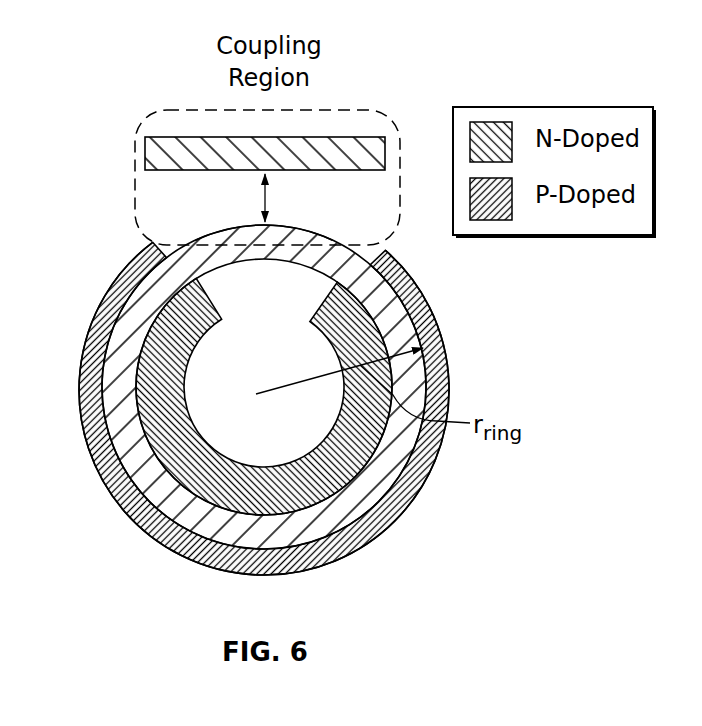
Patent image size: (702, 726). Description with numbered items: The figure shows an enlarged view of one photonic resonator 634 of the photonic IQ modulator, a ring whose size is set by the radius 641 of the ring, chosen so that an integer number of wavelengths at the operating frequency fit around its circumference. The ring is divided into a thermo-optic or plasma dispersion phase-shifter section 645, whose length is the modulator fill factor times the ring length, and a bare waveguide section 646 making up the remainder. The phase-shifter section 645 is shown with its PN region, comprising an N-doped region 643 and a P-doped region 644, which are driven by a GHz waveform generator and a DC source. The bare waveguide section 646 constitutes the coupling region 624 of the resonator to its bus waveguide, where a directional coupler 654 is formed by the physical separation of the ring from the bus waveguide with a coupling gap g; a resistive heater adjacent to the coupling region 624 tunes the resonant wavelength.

The coupling region 624 is at (217, 127).
The bare waveguide section 646 is at (293, 233).
The directional coupler 654 is at (258, 187).
The radius of the ring 641 is at (280, 392).
The N-doped region 643 is at (177, 453).
The P-doped region 644 is at (437, 343).
The phase-shifter section 645 is at (240, 537).
The photonic resonator 634 is at (385, 515).